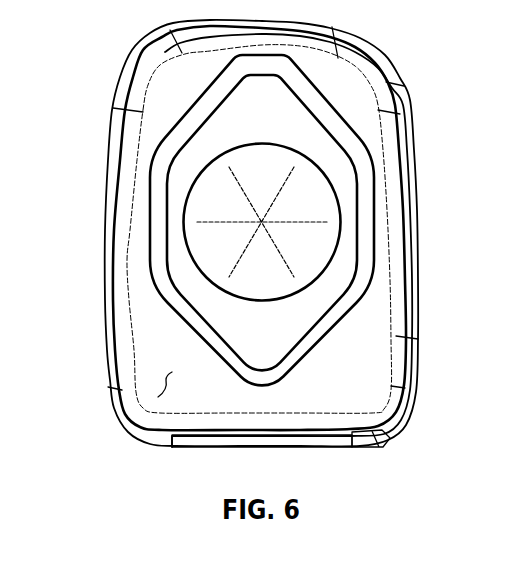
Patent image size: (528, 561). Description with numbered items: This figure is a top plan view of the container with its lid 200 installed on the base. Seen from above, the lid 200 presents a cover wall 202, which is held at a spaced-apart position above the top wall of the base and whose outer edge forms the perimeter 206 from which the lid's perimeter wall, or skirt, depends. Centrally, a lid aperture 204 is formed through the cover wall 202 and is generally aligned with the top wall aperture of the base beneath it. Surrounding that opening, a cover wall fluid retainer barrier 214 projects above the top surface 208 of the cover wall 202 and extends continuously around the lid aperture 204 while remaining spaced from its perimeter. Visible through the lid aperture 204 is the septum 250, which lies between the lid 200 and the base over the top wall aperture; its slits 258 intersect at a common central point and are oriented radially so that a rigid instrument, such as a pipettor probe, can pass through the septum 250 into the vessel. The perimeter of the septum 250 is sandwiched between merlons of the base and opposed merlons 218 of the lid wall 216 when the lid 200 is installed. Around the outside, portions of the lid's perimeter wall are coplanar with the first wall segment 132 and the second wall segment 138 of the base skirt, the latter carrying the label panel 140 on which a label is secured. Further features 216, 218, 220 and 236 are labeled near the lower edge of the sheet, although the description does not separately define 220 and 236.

The first wall segment 132 is at (394, 84).
The second wall segment 138 is at (386, 432).
The label panel 140 is at (203, 448).
The lid 200 is at (415, 300).
The cover wall 202 is at (370, 337).
The lid aperture 204 is at (180, 215).
The perimeter 206 is at (404, 335).
The top surface 208 is at (150, 382).
The cover wall fluid retainer barrier 214 is at (178, 312).
The lid wall 216 is at (99, 560).
The merlons 218 is at (8, 557).
The feature 220 is at (53, 557).
The feature 236 is at (149, 558).
The septum 250 is at (310, 208).
The slits 258 is at (285, 190).